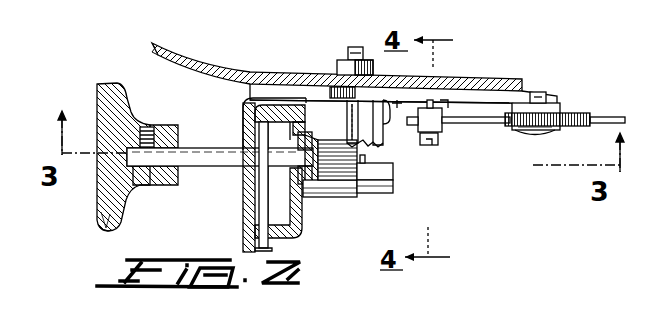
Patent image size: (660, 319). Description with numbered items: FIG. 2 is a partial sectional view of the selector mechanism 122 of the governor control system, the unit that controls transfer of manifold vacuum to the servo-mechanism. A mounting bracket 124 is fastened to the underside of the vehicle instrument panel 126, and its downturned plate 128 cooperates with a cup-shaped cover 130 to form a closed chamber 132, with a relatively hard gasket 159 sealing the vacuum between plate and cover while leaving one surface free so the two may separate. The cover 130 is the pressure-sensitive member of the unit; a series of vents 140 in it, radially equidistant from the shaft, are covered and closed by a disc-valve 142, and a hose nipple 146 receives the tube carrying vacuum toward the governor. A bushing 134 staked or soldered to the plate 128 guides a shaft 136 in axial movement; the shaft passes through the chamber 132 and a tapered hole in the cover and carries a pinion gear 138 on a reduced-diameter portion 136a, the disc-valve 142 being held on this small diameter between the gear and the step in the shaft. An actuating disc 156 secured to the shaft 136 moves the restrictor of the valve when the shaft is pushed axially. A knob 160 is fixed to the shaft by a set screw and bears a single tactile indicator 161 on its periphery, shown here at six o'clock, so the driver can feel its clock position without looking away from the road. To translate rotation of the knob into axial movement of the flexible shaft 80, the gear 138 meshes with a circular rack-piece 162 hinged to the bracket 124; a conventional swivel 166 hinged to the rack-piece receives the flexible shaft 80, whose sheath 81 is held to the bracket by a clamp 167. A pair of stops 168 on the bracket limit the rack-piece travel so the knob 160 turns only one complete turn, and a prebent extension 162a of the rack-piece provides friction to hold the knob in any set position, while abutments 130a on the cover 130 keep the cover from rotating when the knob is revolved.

The flexible shaft 80 is at (462, 124).
The sheath 81 is at (553, 118).
The selector mechanism 122 is at (499, 199).
The mounting bracket 124 is at (476, 93).
The instrument panel 126 is at (184, 44).
The plate 128 is at (243, 218).
The cover 130 is at (294, 232).
The abutments 130a is at (286, 104).
The chamber 132 is at (278, 205).
The bushing 134 is at (222, 186).
The shaft 136 is at (187, 147).
The reduced-diameter shaft portion 136a is at (376, 142).
The pinion gear 138 is at (392, 180).
The vents 140 is at (296, 137).
The disc-valve 142 is at (307, 193).
The hose nipple 146 is at (388, 193).
The actuating disc 156 is at (258, 126).
The gasket 159 is at (258, 240).
The knob 160 is at (96, 190).
The tactile indicator 161 is at (105, 231).
The rack-piece 162 is at (397, 103).
The extension 162a is at (497, 126).
The swivel 166 is at (445, 130).
The clamp 167 is at (556, 131).
The stops 168 is at (443, 100).